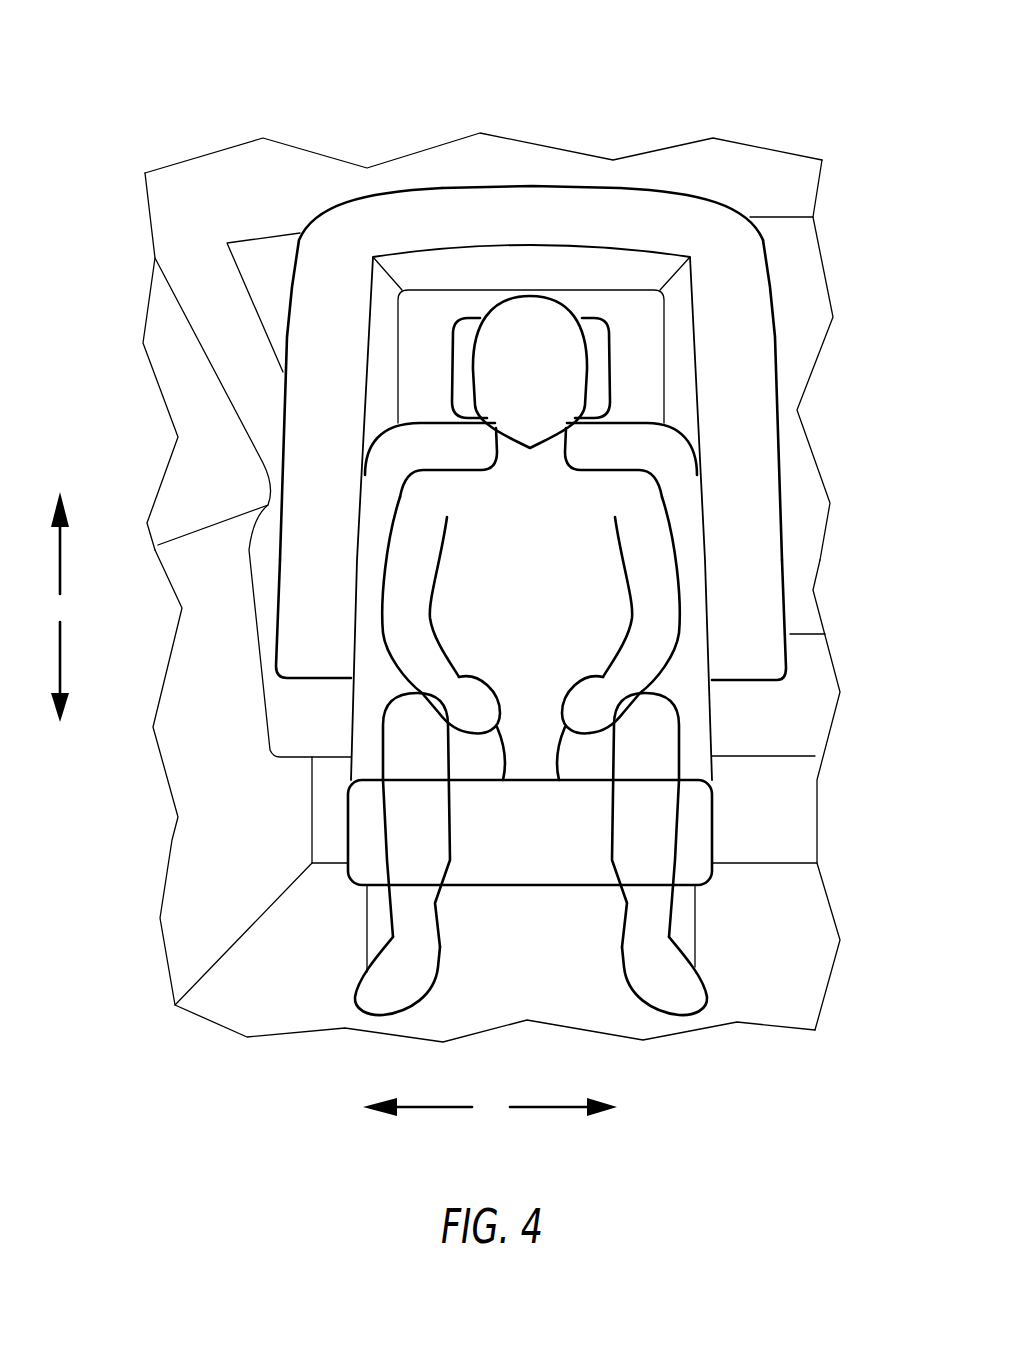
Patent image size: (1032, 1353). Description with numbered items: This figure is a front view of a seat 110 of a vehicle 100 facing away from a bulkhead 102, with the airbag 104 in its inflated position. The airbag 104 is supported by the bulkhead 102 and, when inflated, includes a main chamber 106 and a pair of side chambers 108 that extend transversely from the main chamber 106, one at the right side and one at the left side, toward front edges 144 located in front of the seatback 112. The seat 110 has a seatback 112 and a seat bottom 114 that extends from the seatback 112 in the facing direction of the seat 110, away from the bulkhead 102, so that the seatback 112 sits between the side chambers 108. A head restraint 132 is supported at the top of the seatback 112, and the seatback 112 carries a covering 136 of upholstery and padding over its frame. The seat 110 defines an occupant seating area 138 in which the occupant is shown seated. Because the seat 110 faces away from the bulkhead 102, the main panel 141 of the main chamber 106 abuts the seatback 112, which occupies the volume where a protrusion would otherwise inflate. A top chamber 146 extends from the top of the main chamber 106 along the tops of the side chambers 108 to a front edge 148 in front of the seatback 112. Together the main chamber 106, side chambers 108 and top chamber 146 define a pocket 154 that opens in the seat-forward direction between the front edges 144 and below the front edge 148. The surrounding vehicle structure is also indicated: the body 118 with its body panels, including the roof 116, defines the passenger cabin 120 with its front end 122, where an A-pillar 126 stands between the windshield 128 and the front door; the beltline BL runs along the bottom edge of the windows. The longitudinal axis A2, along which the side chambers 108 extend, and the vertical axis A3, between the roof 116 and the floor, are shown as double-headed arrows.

The vehicle 100 is at (300, 52).
The bulkhead 102 is at (803, 568).
The airbag 104 is at (800, 298).
The main chamber 106 is at (615, 312).
The side chambers 108 is at (310, 417).
The seat 110 is at (805, 732).
The seatback 112 is at (703, 715).
The seat bottom 114 is at (703, 845).
The roof 116 is at (493, 160).
The body 118 is at (173, 853).
The passenger cabin 120 is at (170, 218).
The front end 122 is at (803, 780).
The A-pillar 126 is at (207, 290).
The windshield 128 is at (273, 255).
The head restraint 132 is at (457, 357).
The covering 136 is at (620, 433).
The occupant seating area 138 is at (667, 478).
The main panel 141 is at (425, 380).
The front edges 144 is at (765, 533).
The top chamber 146 is at (530, 258).
The front edge 148 is at (690, 222).
The pocket 154 is at (653, 337).
The beltline BL is at (197, 530).
The longitudinal axis A2 is at (490, 1107).
The vertical axis A3 is at (59, 607).